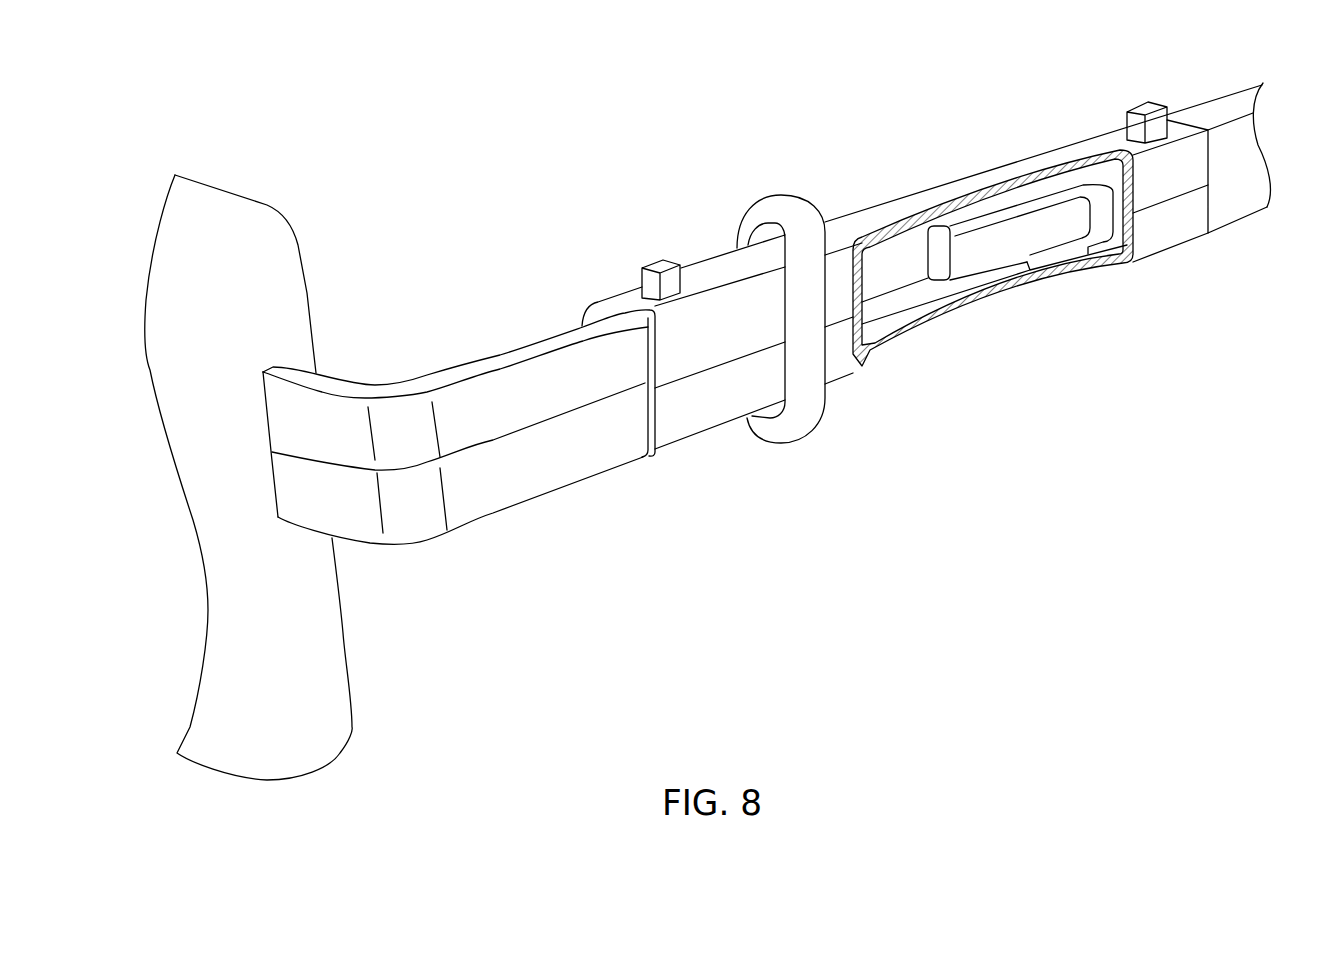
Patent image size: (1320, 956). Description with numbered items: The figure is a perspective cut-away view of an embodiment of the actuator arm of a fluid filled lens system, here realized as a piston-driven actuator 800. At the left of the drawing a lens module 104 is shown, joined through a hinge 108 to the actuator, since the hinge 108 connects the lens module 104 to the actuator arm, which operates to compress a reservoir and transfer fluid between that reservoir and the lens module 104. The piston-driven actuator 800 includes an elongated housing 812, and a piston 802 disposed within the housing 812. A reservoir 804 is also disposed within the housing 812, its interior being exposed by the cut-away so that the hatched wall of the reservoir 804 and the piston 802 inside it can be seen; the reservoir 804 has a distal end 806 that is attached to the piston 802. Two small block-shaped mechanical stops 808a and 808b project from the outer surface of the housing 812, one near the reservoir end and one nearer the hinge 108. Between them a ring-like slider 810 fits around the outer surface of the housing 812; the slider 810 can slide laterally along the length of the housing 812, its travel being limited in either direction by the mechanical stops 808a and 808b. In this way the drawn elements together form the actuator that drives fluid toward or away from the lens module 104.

The lens module 104 is at (258, 218).
The hinge 108 is at (488, 507).
The piston-driven actuator 800 is at (557, 152).
The piston 802 is at (1053, 208).
The reservoir 804 is at (877, 257).
The distal end 806 is at (940, 226).
The mechanical stop 808a is at (1146, 101).
The mechanical stop 808b is at (661, 259).
The slider 810 is at (780, 207).
The housing 812 is at (746, 296).